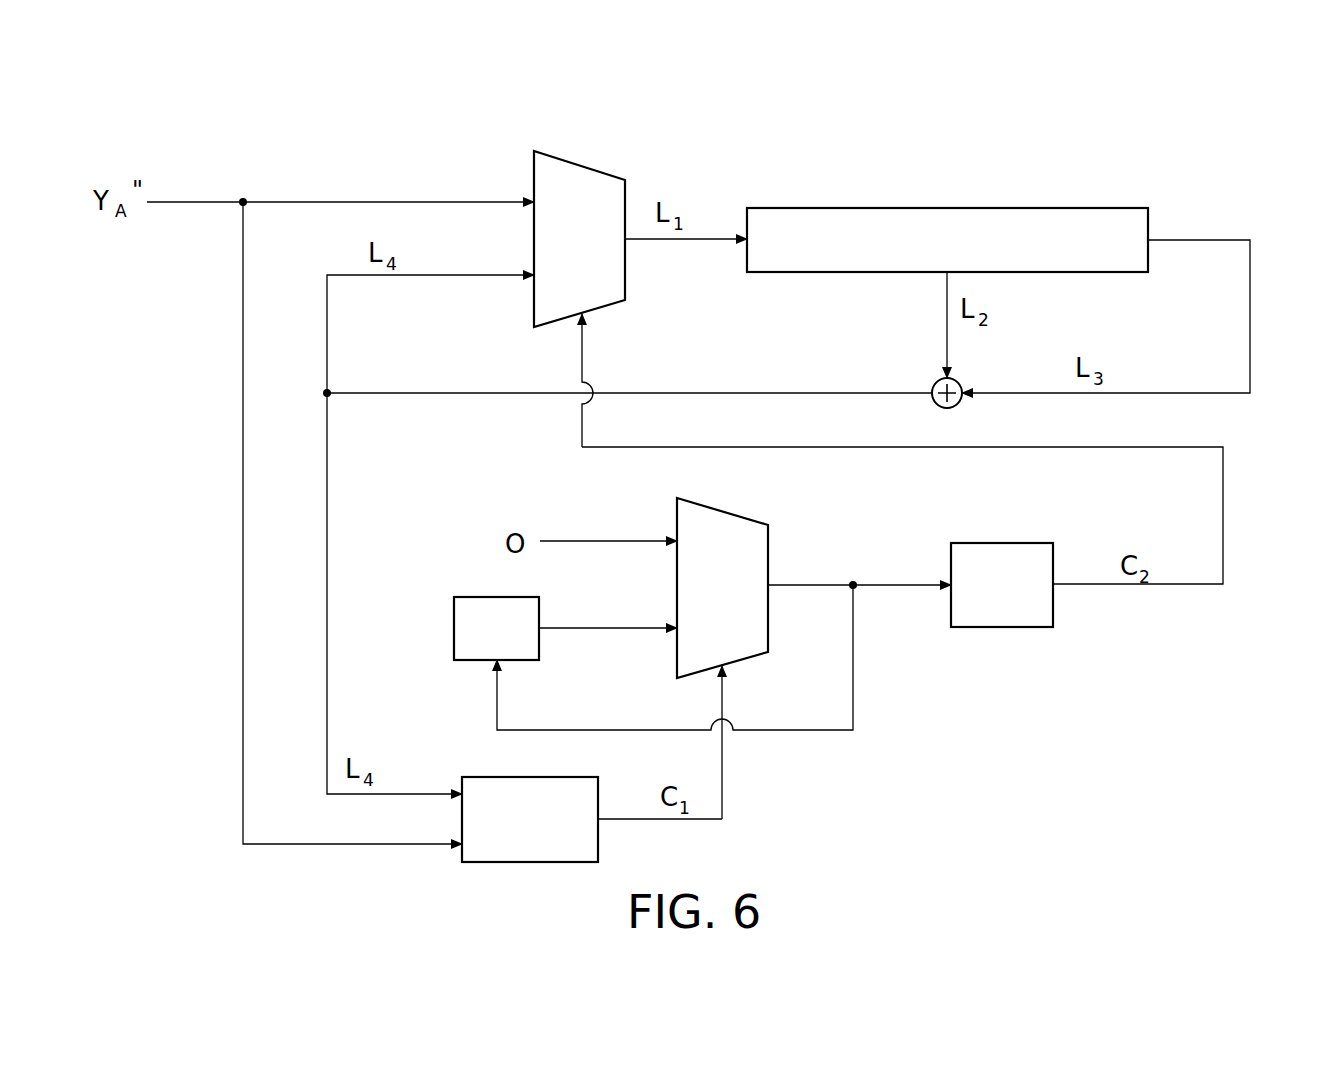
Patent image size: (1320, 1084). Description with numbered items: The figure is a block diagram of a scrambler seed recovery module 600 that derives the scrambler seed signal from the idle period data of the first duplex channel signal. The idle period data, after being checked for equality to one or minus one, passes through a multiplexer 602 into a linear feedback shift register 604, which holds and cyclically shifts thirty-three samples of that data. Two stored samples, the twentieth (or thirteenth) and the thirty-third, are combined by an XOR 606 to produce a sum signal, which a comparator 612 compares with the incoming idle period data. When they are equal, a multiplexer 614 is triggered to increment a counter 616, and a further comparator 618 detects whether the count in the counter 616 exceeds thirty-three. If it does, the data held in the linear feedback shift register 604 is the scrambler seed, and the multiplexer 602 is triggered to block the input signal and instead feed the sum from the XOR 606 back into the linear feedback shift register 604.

The scrambler seed recovery module 600 is at (1174, 137).
The multiplexer 602 is at (576, 164).
The linear feedback shift register 604 is at (946, 207).
The XOR 606 is at (957, 383).
The comparator 612 is at (531, 776).
The multiplexer 614 is at (724, 512).
The counter 616 is at (498, 596).
The comparator 618 is at (1004, 542).